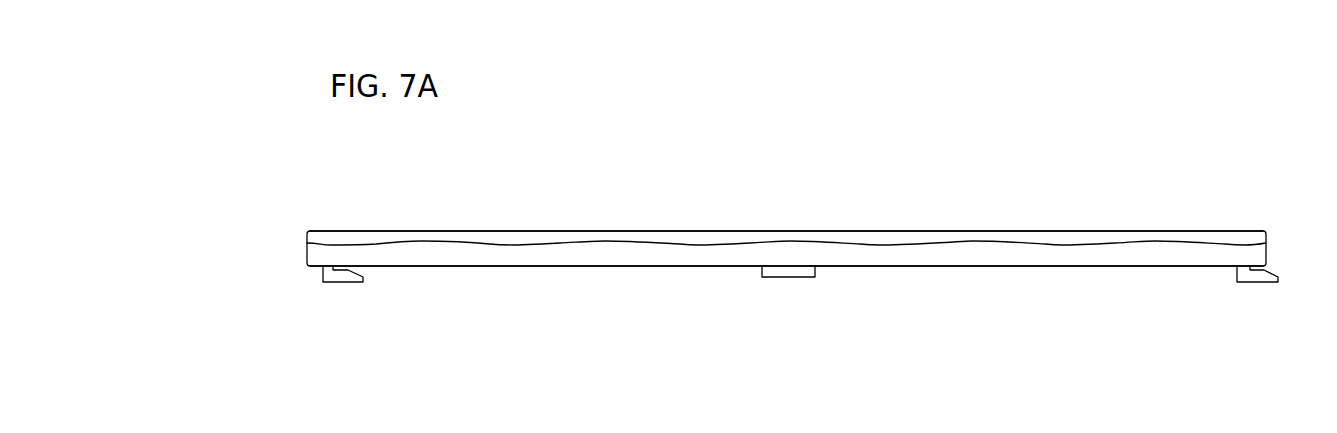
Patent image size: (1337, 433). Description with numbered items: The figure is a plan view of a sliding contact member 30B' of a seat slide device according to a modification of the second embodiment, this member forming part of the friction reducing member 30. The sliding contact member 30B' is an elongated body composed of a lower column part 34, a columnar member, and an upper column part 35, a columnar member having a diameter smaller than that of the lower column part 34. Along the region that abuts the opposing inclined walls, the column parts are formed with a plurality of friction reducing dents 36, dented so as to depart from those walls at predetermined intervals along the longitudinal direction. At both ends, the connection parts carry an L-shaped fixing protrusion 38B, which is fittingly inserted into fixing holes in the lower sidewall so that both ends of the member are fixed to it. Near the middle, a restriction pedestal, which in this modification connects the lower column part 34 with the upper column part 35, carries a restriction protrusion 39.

The friction reducing member 30 is at (792, 220).
The sliding contact member 30B' is at (786, 172).
The lower column part 34 is at (604, 236).
The upper column part 35 is at (607, 250).
The friction reducing dents 36 is at (513, 245).
The fixing protrusion 38B is at (342, 283).
The restriction protrusion 39 is at (787, 272).